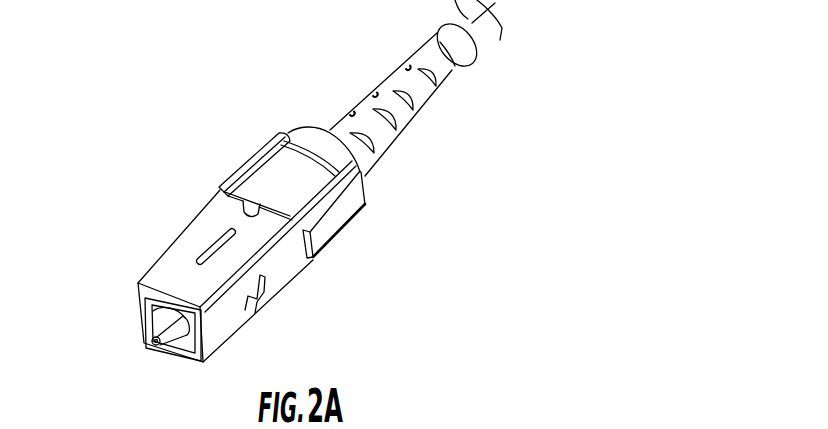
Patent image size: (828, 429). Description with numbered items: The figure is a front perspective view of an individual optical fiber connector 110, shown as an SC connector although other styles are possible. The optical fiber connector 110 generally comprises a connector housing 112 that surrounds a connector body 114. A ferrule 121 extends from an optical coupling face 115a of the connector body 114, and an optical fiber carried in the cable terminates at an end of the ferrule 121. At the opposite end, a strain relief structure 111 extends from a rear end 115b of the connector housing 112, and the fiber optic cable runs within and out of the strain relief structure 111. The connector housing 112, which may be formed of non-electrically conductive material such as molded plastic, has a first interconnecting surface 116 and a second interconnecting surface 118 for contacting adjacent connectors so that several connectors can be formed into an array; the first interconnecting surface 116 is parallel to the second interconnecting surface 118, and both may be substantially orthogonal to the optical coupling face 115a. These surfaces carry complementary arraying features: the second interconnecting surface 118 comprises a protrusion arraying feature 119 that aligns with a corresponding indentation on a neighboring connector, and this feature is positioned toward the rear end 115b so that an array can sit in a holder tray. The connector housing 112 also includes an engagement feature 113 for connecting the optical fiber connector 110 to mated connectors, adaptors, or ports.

The optical fiber connector 110 is at (272, 213).
The strain relief structure 111 is at (430, 93).
The connector housing 112 is at (324, 265).
The engagement feature 113 is at (243, 313).
The connector body 114 is at (177, 360).
The optical coupling face 115a is at (203, 293).
The rear end 115b is at (338, 203).
The first interconnecting surface 116 is at (222, 188).
The second interconnecting surface 118 is at (287, 273).
The protrusion arraying feature 119 is at (358, 206).
The ferrule 121 is at (158, 333).